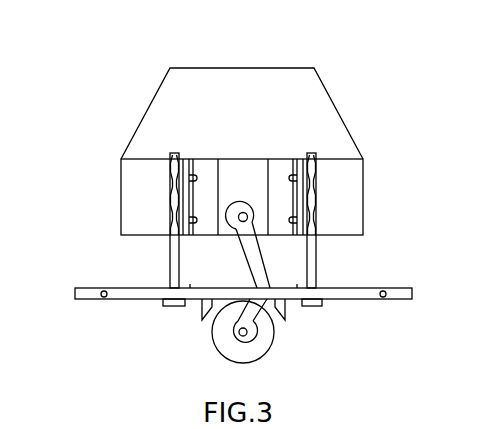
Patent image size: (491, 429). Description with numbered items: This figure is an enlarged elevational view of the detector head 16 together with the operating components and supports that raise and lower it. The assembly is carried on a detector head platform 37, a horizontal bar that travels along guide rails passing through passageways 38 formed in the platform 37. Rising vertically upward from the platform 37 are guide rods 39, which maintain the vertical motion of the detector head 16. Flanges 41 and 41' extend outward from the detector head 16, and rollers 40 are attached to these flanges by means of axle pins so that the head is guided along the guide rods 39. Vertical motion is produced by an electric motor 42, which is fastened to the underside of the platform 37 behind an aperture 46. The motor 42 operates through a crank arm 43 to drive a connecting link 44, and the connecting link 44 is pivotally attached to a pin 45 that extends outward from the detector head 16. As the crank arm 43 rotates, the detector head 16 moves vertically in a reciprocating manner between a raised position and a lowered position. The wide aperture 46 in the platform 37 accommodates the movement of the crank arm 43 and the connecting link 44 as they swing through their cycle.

The detector head 16 is at (352, 105).
The detector head platform 37 is at (363, 288).
The passageways 38 is at (102, 292).
The guide rods 39 is at (170, 258).
The rollers 40 is at (180, 215).
The flange 41 is at (162, 135).
The flange 41' is at (314, 135).
The electric motor 42 is at (212, 342).
The crank arm 43 is at (257, 318).
The connecting link 44 is at (240, 260).
The pin 45 is at (243, 212).
The aperture 46 is at (192, 299).